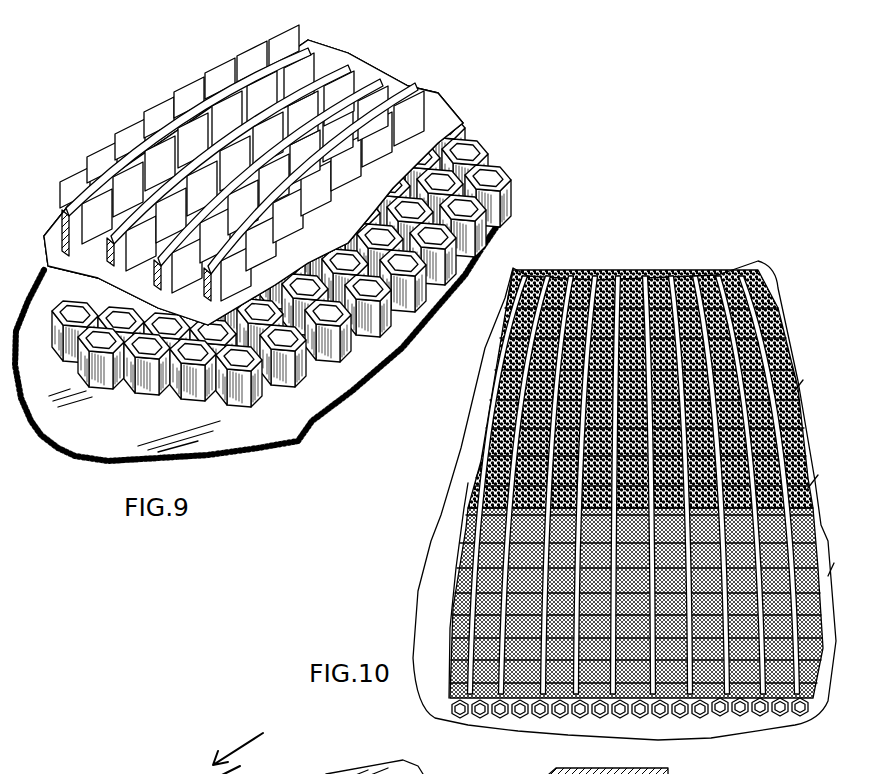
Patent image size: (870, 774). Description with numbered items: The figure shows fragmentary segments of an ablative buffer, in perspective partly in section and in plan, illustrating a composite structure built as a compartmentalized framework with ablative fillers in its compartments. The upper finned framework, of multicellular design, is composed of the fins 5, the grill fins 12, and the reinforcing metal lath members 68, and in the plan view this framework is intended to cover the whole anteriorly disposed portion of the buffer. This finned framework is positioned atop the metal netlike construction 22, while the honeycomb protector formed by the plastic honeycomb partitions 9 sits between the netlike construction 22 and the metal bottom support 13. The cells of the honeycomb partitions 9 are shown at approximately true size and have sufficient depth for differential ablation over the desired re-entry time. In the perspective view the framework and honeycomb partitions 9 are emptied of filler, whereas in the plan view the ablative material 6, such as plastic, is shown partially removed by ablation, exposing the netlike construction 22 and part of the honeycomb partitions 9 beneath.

In FIG. 9, the fins 5 is at (168, 112).
In FIG. 10, the fins 5 is at (485, 665).
In FIG. 10, the ablative material 6 is at (760, 387).
In FIG. 9, the honeycomb partitions 9 is at (177, 382).
In FIG. 10, the honeycomb partitions 9 is at (795, 695).
In FIG. 9, the grill fins 12 is at (365, 65).
In FIG. 10, the grill fins 12 is at (562, 673).
In FIG. 9, the metal bottom support 13 is at (61, 445).
In FIG. 10, the metal bottom support 13 is at (450, 447).
In FIG. 9, the metal netlike construction 22 is at (40, 240).
In FIG. 10, the metal netlike construction 22 is at (480, 627).
In FIG. 9, the reinforcing metal lath members 68 is at (228, 106).
In FIG. 10, the reinforcing metal lath members 68 is at (522, 590).